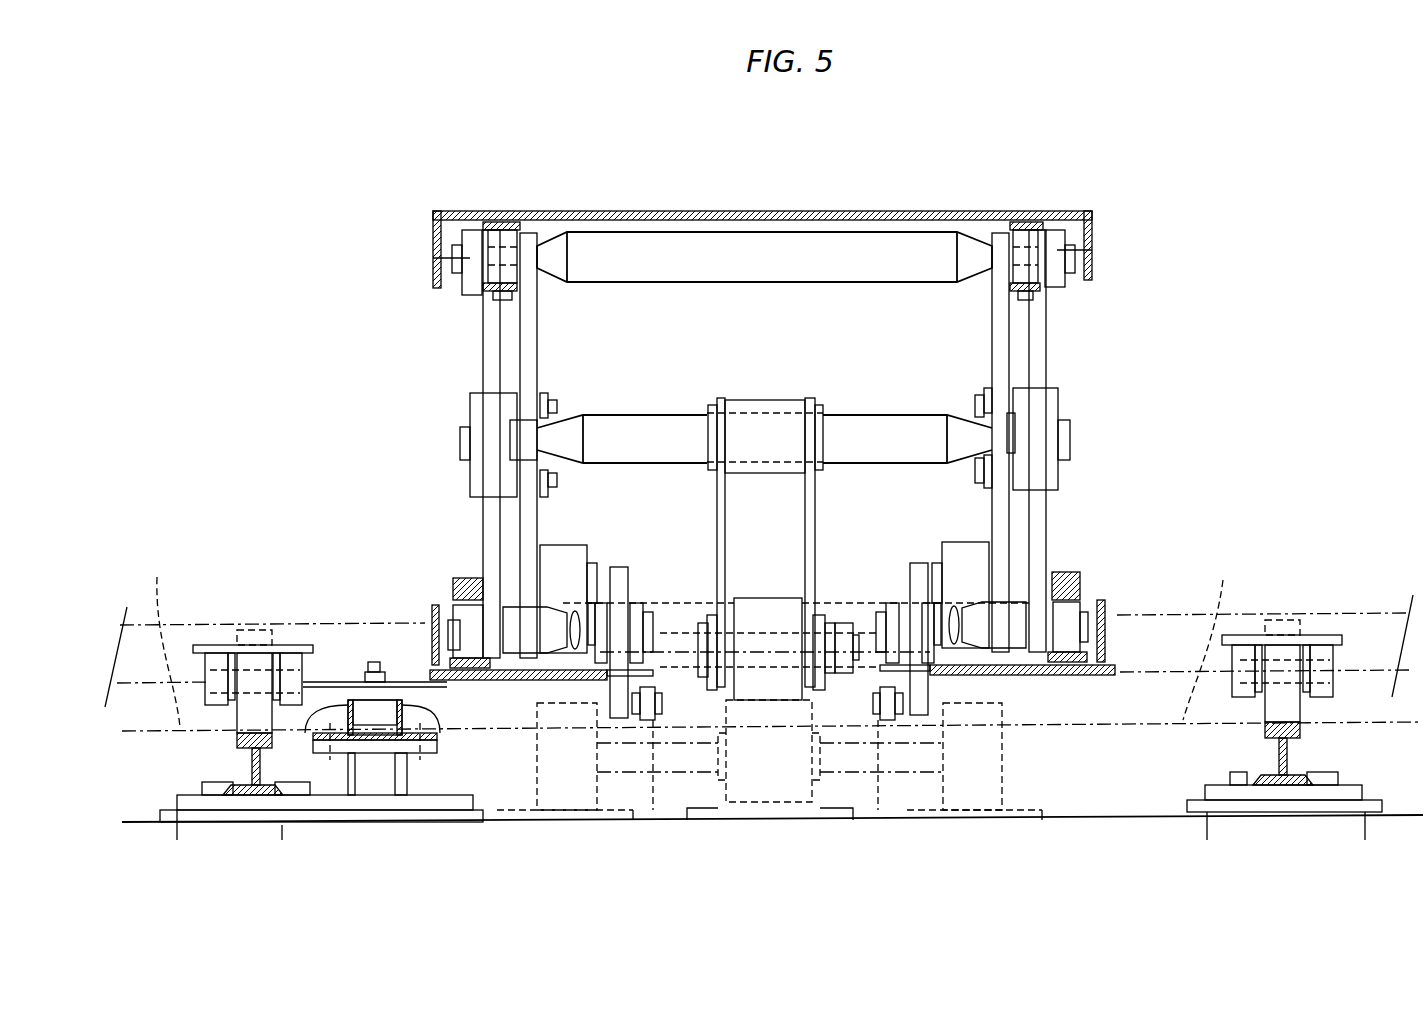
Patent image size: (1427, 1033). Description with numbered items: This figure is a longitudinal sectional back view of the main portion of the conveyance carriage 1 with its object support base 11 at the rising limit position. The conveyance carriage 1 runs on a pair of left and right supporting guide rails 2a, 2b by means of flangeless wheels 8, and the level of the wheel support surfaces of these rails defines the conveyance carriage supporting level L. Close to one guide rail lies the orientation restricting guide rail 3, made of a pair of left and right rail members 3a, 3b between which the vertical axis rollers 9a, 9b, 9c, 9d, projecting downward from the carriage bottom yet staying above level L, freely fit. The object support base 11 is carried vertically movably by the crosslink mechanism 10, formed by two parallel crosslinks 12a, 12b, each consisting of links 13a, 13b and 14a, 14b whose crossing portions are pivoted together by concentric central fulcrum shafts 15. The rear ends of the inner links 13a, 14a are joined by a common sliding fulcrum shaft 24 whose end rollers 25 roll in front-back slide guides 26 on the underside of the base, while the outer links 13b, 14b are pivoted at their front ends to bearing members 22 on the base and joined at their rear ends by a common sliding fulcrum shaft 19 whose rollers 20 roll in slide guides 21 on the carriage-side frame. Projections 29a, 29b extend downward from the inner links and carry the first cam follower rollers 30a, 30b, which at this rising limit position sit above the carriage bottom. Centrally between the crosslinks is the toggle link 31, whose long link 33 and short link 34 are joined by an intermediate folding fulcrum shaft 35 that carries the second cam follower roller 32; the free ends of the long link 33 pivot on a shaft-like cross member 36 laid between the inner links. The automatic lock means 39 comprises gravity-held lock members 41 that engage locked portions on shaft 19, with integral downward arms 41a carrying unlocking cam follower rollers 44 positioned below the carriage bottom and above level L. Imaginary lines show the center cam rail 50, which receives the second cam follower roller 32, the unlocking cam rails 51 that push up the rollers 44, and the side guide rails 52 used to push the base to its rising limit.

The conveyance carriage 1 is at (1345, 608).
The supporting guide rail 2a is at (237, 740).
The supporting guide rail 2b is at (1300, 730).
The orientation restricting guide rail 3 is at (375, 718).
The rail member 3a is at (313, 737).
The rail member 3b is at (400, 715).
The wheels 8 is at (258, 660).
The vertical axis roller 9a is at (375, 812).
The vertical axis roller 9b is at (375, 812).
The vertical axis roller 9c is at (375, 812).
The vertical axis roller 9d is at (372, 742).
The crosslink mechanism 10 is at (455, 445).
The object support base 11 is at (738, 211).
The crosslink 12a is at (489, 444).
The crosslink 12b is at (1082, 441).
The link 13a is at (537, 335).
The link 13b is at (500, 375).
The link 14a is at (992, 355).
The link 14b is at (1047, 372).
The central fulcrum shafts 15 is at (470, 410).
The common sliding fulcrum shaft 19 is at (560, 570).
The rollers 20 is at (436, 636).
The front-back slide guides 21 is at (450, 580).
The bearing members 22 is at (455, 252).
The common sliding fulcrum shaft 24 is at (832, 255).
The rollers 25 is at (500, 224).
The front-back slide guides 26 is at (498, 300).
The projection 29a is at (532, 580).
The projection 29b is at (1003, 580).
The first cam follower roller 30a is at (499, 444).
The first cam follower roller 30b is at (1082, 441).
The toggle link 31 is at (817, 505).
The second cam follower roller 32 is at (770, 680).
The long link 33 is at (819, 542).
The short link 34 is at (715, 622).
The intermediate folding fulcrum shaft 35 is at (775, 625).
The shaft-like cross member 36 is at (671, 420).
The automatic lock means 39 is at (618, 567).
The lock members 41 is at (789, 596).
The arms 41a is at (600, 688).
The unlocking cam follower rollers 44 is at (662, 700).
The center cam rail 50 is at (755, 743).
The unlocking cam rails 51 is at (650, 758).
The side guide rails 52 is at (560, 762).
The conveyance carriage supporting level L is at (691, 634).